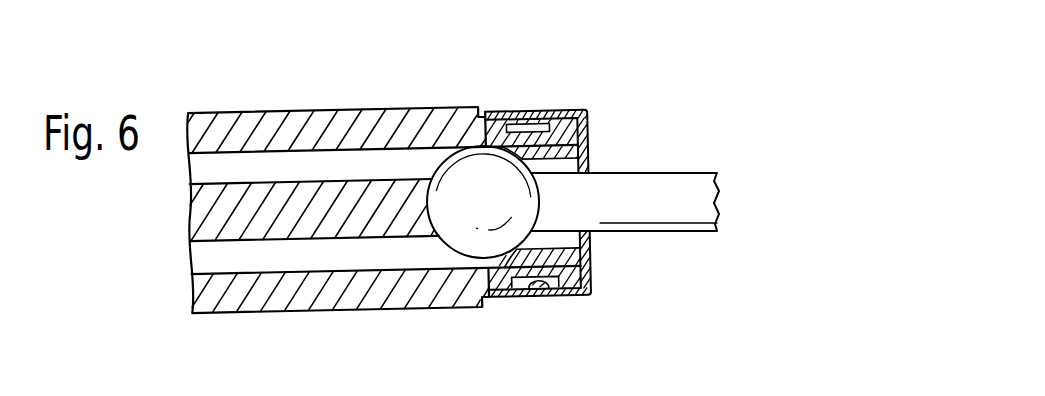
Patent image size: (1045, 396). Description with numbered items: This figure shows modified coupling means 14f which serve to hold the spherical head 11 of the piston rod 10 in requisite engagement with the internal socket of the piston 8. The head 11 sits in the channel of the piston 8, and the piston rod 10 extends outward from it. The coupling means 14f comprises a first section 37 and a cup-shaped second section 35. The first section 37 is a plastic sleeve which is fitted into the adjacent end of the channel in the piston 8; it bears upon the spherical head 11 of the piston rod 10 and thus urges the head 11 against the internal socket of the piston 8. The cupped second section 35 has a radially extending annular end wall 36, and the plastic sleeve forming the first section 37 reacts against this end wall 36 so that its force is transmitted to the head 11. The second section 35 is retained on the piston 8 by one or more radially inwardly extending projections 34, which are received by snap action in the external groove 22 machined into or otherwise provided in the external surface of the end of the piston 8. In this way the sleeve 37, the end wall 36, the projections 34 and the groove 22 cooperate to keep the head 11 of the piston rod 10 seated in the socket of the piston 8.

The piston 8 is at (359, 291).
The piston rod 10 is at (699, 180).
The head 11 is at (460, 235).
The coupling means 14f is at (592, 154).
The external groove 22 is at (530, 113).
The radially inwardly extending projection 34 is at (532, 292).
The cup-shaped second section 35 is at (511, 112).
The end wall 36 is at (590, 262).
The first section 37 is at (571, 293).